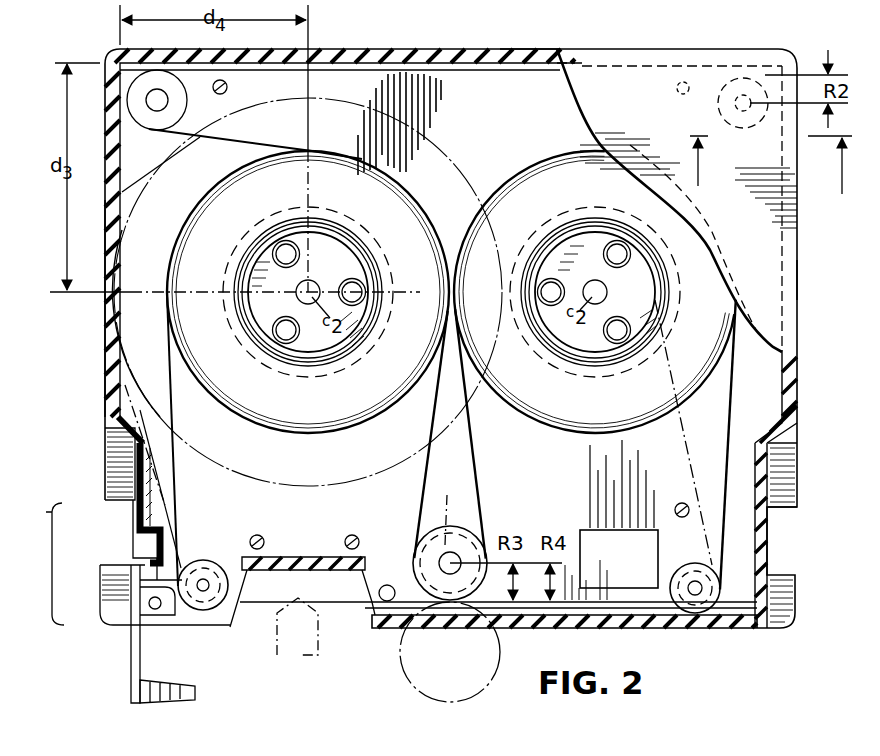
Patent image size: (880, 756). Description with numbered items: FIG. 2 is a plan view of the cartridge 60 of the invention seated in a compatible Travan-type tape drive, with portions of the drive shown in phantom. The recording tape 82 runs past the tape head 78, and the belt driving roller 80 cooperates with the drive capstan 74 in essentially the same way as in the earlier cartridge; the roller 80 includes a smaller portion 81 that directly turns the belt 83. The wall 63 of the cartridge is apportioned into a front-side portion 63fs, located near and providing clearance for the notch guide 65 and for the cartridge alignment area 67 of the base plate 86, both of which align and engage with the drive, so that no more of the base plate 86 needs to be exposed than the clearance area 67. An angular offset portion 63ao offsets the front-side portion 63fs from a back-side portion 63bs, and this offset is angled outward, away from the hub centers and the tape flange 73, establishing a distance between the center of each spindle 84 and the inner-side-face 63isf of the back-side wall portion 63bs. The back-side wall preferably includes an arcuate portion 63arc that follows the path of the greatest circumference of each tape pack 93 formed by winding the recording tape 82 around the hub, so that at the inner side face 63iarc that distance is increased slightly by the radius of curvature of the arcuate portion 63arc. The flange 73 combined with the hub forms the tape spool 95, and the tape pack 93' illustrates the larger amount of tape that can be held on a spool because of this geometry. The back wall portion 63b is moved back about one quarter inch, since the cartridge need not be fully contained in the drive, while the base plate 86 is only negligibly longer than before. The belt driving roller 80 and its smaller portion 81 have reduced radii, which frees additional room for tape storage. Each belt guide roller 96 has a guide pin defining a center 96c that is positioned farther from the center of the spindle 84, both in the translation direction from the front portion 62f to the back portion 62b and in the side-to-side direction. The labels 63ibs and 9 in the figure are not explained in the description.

The cartridge 60 is at (818, 280).
The back portion 62b is at (792, 53).
The front portion 62f is at (758, 630).
The wall 63 is at (523, 51).
The back wall portion 63b is at (413, 57).
The back-side wall portion 63bs is at (105, 85).
The inner-side-face 63isf is at (481, 66).
The inner back side 63ibs is at (148, 190).
The inner-side-face of arcuate portion 63iarc is at (104, 303).
The arcuate portion 63arc is at (104, 325).
The angular offset portion 63ao is at (103, 438).
The front-side portion 63fs is at (131, 504).
The notch guide 65 is at (132, 548).
The cartridge alignment area 67 is at (42, 564).
The tape flange 73 is at (397, 283).
The drive capstan 74 is at (405, 670).
The tape head 78 is at (287, 660).
The belt driving roller 80 is at (478, 540).
The smaller portion 81 is at (463, 433).
The recording tape 82 is at (267, 603).
The belt 83 is at (428, 470).
The spindle 84 is at (312, 288).
The base plate 86 is at (785, 459).
The tape pack 93 is at (308, 316).
The tape pack 93' is at (424, 292).
The tape spool 95 is at (288, 217).
The belt guide roller 96 is at (177, 94).
The center 96c is at (156, 111).
The dimension 9 is at (771, 176).